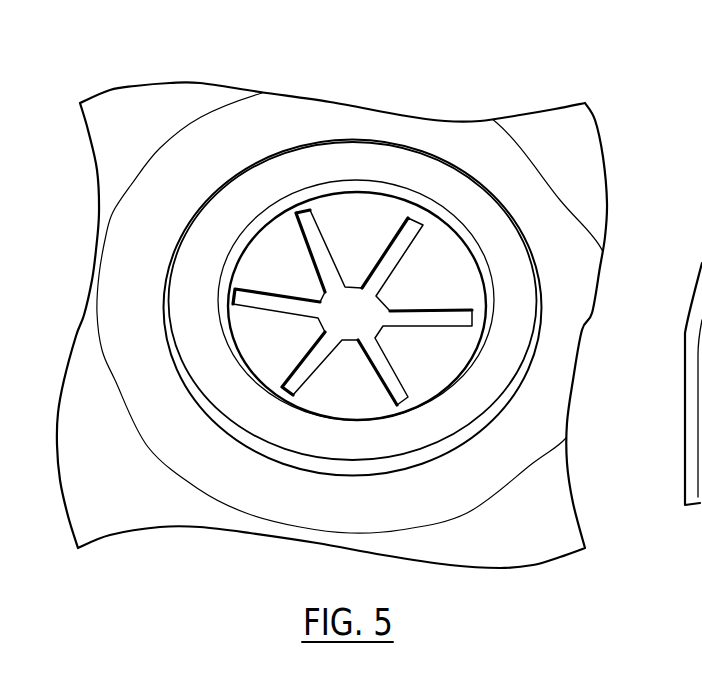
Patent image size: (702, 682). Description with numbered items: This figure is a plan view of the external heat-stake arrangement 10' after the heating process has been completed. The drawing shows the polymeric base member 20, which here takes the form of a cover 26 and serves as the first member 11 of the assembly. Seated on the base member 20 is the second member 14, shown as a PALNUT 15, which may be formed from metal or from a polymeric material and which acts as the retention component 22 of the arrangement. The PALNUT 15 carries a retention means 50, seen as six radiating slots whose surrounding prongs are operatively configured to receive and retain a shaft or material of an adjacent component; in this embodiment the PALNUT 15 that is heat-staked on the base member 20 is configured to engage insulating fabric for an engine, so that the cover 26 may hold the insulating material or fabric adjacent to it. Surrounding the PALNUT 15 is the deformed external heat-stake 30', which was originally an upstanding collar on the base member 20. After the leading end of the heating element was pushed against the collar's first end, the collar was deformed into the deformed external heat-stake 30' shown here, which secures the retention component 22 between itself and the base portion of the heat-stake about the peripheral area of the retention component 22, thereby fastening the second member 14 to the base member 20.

The external heat-stake arrangement 10' is at (373, 326).
The first member 11 is at (372, 320).
The polymeric base member 20 is at (372, 320).
The cover 26 is at (592, 143).
The second member 14 is at (454, 300).
The palnut 15 is at (454, 300).
The retention component 22 is at (467, 273).
The deformed external heat-stake 30' is at (353, 383).
The retention means 50 is at (297, 280).